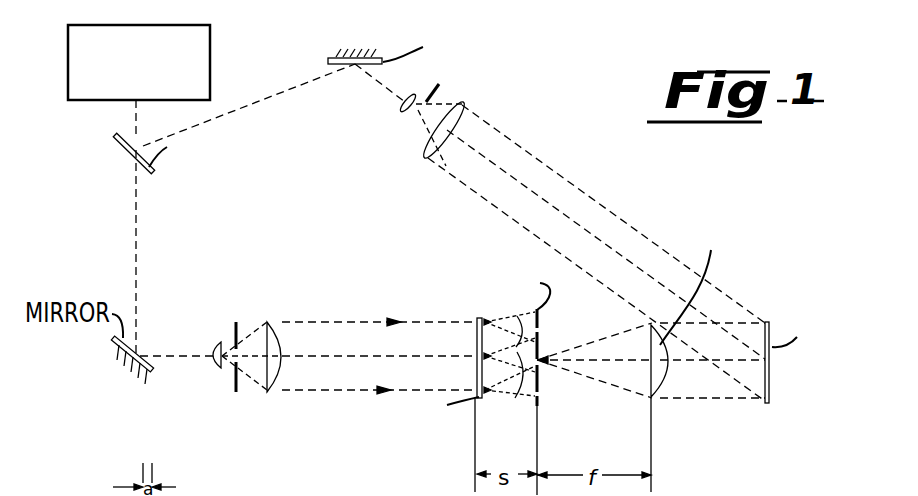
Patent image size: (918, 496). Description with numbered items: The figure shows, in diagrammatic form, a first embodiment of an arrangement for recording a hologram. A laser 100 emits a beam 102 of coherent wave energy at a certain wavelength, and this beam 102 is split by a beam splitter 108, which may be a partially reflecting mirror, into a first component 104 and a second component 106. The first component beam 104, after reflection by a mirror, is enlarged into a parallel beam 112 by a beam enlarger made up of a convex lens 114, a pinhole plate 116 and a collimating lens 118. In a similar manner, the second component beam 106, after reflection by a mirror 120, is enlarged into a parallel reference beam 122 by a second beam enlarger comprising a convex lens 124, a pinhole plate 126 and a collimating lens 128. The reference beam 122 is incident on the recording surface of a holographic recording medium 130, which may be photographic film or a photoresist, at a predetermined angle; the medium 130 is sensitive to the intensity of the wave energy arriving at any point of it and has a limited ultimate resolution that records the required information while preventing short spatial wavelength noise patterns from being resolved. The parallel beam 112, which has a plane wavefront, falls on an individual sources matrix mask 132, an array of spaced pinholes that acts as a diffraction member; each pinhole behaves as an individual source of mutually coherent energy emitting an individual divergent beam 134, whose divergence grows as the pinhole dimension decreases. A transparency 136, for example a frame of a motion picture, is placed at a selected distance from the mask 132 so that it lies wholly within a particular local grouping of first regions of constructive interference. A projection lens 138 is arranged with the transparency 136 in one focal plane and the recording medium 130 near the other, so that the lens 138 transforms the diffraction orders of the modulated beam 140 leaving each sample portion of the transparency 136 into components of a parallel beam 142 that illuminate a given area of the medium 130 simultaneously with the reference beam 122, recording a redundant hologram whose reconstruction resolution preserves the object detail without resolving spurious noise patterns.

The laser 100 is at (213, 44).
The beam 102 is at (135, 124).
The first component beam 104 is at (137, 219).
The second component beam 106 is at (285, 96).
The beam splitter 108 is at (115, 145).
The parallel beam 112 is at (328, 322).
The convex lens 114 is at (218, 366).
The pinhole plate 116 is at (235, 322).
The collimating lens 118 is at (264, 322).
The mirror 120 is at (330, 60).
The parallel reference beam 122 is at (535, 157).
The convex lens 124 is at (414, 93).
The pinhole plate 126 is at (418, 117).
The collimating lens 128 is at (465, 103).
The holographic recording medium 130 is at (770, 373).
The individual sources matrix mask 132 is at (478, 398).
The individual divergent beam 134 is at (518, 327).
The transparency 136 is at (540, 392).
The projection lens 138 is at (655, 396).
The modulated beam 140 is at (575, 350).
The parallel beam 142 is at (728, 403).